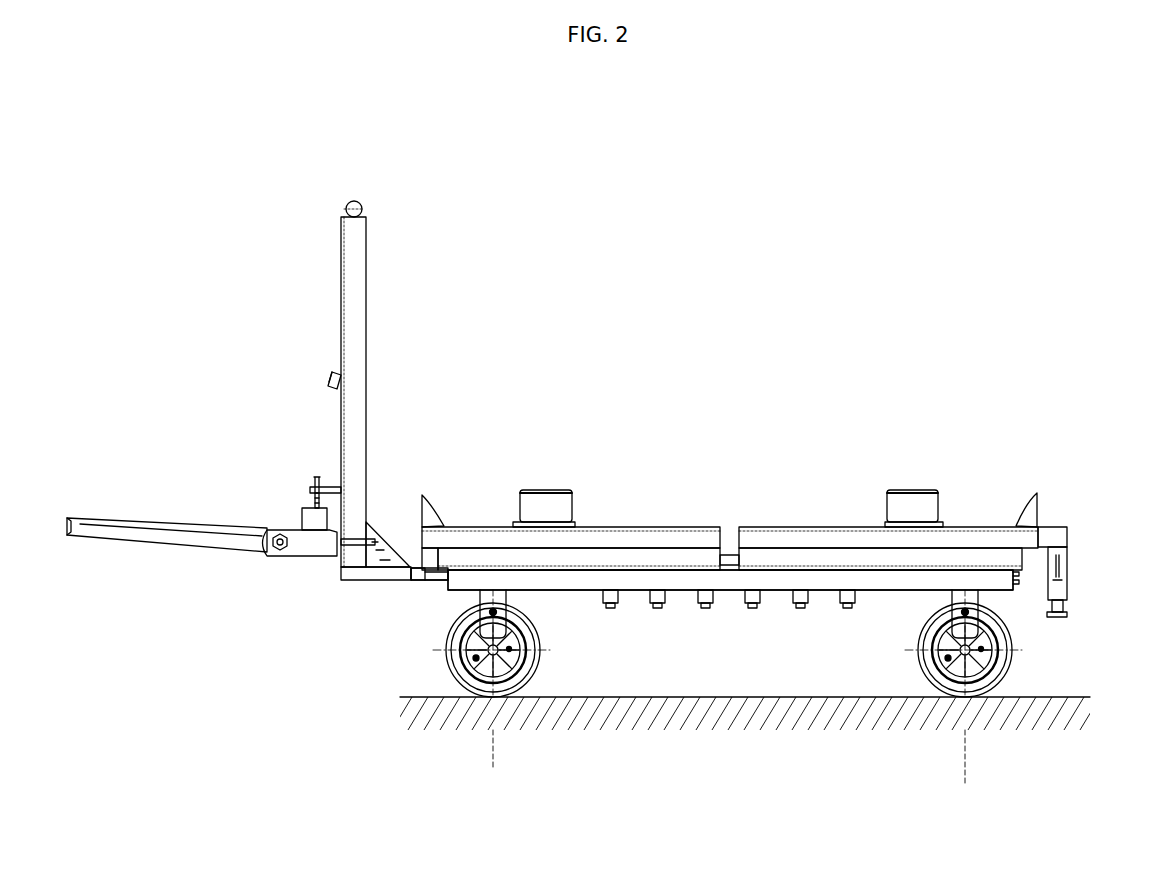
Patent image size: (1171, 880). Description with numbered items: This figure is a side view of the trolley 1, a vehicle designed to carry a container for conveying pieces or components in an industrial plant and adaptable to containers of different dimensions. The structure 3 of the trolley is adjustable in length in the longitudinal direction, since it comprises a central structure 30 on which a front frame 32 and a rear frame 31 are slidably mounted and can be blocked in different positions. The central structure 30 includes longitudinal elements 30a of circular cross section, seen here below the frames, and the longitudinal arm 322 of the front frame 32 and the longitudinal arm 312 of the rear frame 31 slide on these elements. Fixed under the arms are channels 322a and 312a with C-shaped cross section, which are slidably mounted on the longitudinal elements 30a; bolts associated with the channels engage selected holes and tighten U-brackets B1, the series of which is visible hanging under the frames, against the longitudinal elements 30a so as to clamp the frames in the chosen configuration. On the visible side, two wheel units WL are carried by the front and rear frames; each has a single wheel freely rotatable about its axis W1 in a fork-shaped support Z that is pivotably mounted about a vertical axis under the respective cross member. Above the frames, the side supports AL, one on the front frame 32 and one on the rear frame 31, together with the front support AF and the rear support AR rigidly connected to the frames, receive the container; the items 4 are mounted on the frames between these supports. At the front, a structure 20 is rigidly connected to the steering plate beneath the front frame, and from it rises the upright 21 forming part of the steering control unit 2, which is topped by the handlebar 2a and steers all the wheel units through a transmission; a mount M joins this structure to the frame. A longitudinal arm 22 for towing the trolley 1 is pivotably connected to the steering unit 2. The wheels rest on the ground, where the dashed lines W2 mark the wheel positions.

The trolley 1 is at (864, 226).
The steering control unit 2 is at (257, 397).
The handlebar 2a is at (365, 205).
The upright 21 is at (362, 331).
The longitudinal arm 22 is at (140, 528).
The structure 20 is at (370, 574).
The mount M is at (408, 570).
The structure of the trolley 3 is at (768, 544).
The central structure 30 is at (731, 553).
The longitudinal elements 30a is at (727, 592).
The rear frame 31 is at (888, 496).
The longitudinal arm of the rear frame 312 is at (762, 527).
The channel 312a is at (838, 562).
The front frame 32 is at (571, 499).
The longitudinal arm of the front frame 322 is at (680, 525).
The channel 322a is at (630, 558).
The battery box 4 is at (513, 522).
The side supports AL is at (546, 487).
The front support AF is at (422, 520).
The rear support AR is at (1040, 507).
The U-brackets B1 is at (657, 597).
The fork-shaped support Z is at (488, 596).
The wheel units WL is at (447, 673).
The wheel axis W1 is at (743, 643).
The wheel contact point W2 is at (493, 760).